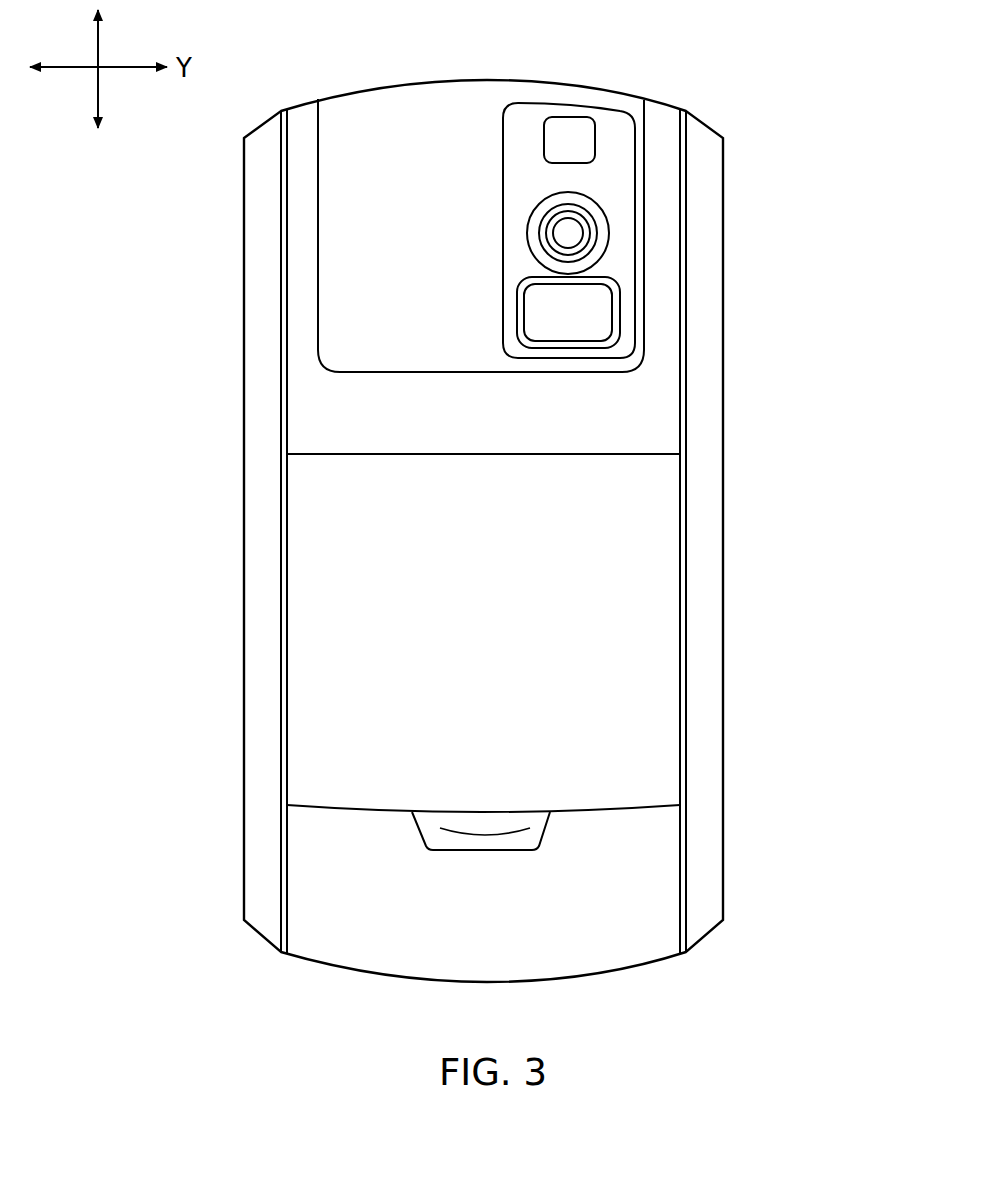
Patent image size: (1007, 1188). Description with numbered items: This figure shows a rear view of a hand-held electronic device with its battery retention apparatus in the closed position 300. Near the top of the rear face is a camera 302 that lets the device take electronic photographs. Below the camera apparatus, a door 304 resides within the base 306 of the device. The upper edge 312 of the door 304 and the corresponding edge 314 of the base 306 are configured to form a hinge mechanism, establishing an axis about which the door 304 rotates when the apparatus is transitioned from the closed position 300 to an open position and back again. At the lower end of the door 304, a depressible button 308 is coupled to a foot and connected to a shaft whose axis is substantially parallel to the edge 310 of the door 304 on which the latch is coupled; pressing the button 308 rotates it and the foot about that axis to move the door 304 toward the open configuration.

The closed position 300 is at (633, 46).
The camera 302 is at (587, 223).
The door 304 is at (297, 480).
The base 306 is at (647, 893).
The depressible button 308 is at (472, 820).
The edge of the door 310 is at (648, 802).
The upper edge of the door 312 is at (650, 450).
The corresponding edge of the base 314 is at (622, 450).